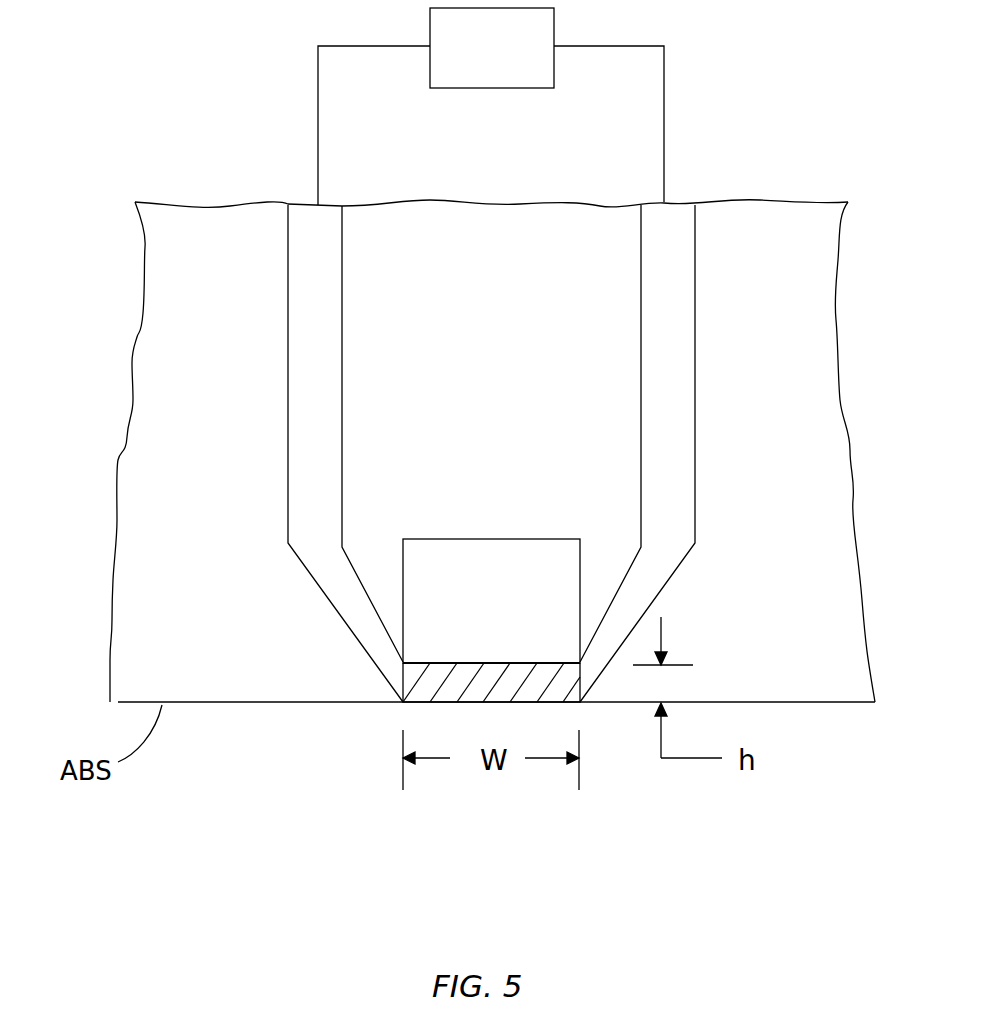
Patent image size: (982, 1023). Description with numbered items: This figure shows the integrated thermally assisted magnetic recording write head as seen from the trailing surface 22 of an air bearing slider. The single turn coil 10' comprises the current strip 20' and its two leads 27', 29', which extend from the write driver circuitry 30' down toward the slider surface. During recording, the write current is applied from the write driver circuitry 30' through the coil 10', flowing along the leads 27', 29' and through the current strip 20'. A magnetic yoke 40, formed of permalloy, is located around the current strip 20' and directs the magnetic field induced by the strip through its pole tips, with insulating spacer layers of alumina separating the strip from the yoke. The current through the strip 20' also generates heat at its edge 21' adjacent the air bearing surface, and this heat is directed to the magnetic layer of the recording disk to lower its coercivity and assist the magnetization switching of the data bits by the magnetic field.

The single turn coil 10' is at (470, 399).
The write driver circuitry 30' is at (491, 106).
The lead 27' is at (366, 408).
The lead 29' is at (622, 413).
The trailing surface 22 is at (130, 610).
The magnetic yoke 40 is at (487, 578).
The current strip 20' is at (471, 781).
The edge 21' is at (561, 790).